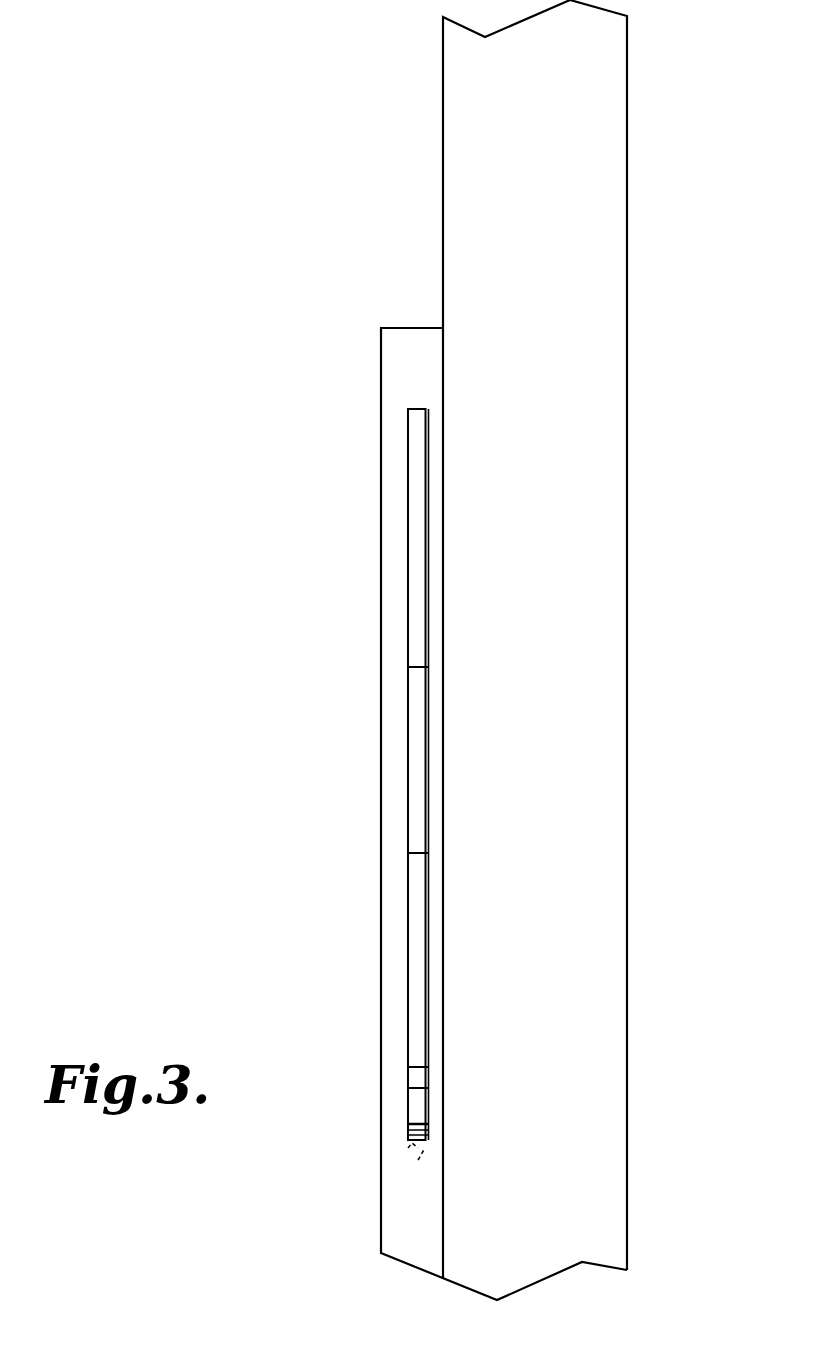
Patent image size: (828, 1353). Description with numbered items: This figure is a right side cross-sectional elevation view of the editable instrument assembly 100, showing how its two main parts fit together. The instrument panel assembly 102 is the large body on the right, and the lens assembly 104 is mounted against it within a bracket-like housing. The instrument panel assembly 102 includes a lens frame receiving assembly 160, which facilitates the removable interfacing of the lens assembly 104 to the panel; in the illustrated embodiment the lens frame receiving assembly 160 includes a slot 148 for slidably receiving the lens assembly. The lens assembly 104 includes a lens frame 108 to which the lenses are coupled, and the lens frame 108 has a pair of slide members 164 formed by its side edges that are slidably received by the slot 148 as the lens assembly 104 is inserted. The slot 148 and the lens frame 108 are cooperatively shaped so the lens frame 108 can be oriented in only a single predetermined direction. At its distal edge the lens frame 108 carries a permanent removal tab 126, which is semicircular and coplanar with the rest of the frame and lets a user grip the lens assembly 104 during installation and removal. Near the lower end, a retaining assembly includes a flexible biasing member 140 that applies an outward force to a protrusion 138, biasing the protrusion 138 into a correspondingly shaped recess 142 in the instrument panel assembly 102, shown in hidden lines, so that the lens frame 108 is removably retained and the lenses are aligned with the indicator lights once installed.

The editable instrument assembly 100 is at (160, 110).
The instrument panel assembly 102 is at (440, 254).
The lens assembly 104 is at (405, 997).
The lens frame receiving assembly 160 is at (412, 403).
The slot 148 is at (408, 463).
The lens frame 108 is at (418, 600).
The removal tab 126 is at (416, 765).
The biasing member 140 is at (415, 1103).
The slide members 164 is at (418, 425).
The protrusion 138 is at (408, 1148).
The recess 142 is at (418, 1160).